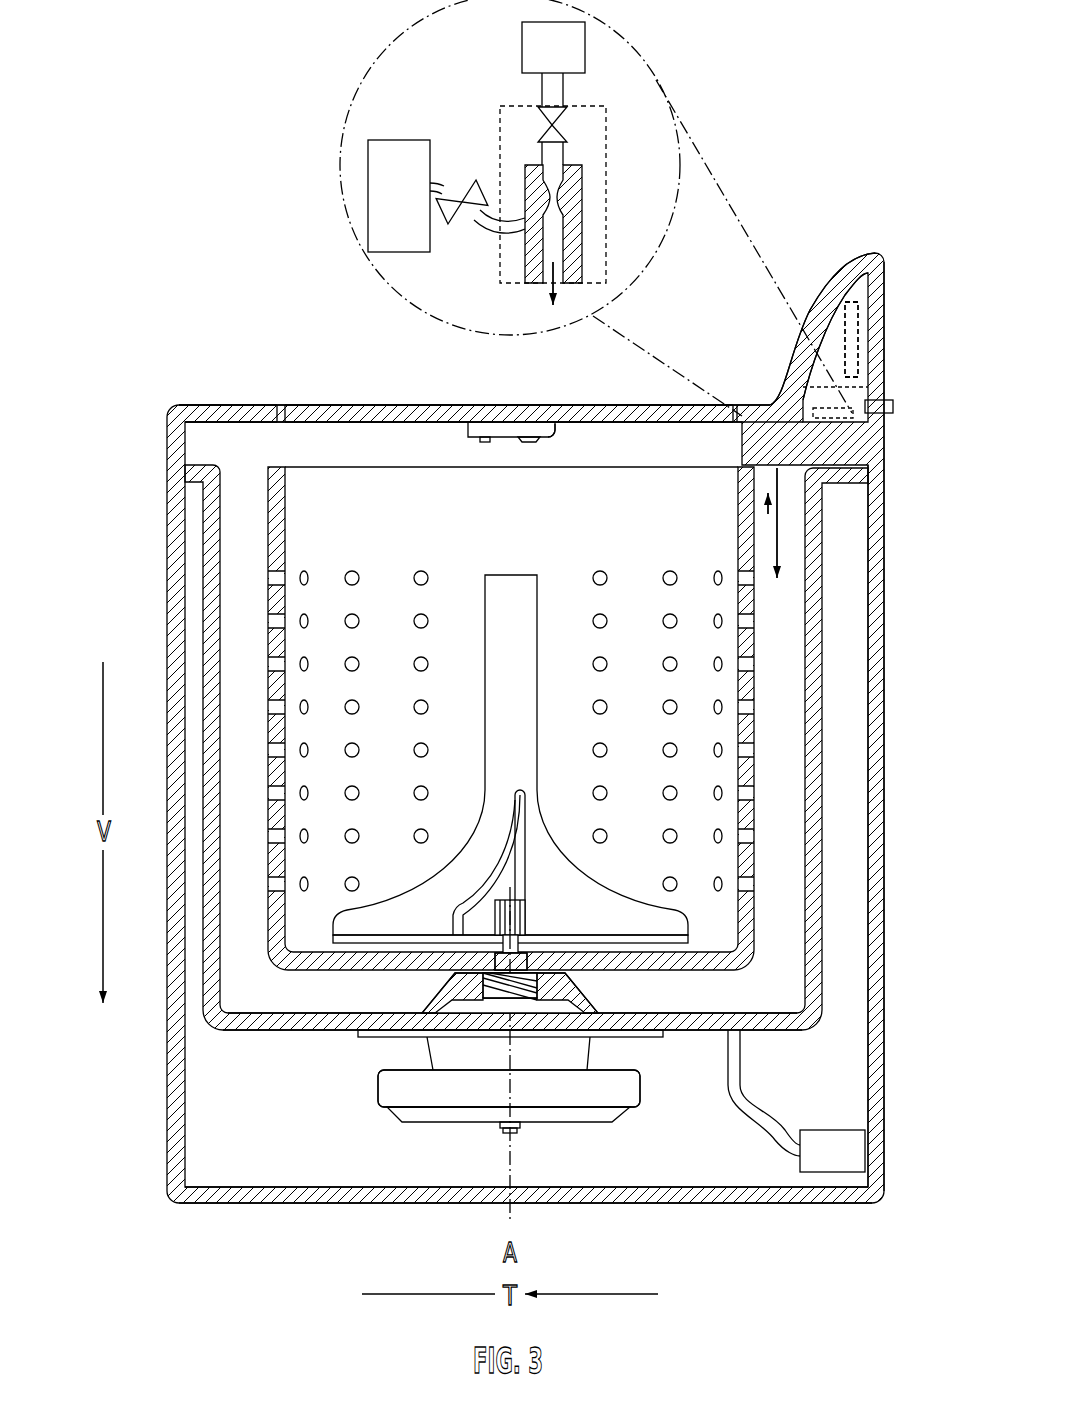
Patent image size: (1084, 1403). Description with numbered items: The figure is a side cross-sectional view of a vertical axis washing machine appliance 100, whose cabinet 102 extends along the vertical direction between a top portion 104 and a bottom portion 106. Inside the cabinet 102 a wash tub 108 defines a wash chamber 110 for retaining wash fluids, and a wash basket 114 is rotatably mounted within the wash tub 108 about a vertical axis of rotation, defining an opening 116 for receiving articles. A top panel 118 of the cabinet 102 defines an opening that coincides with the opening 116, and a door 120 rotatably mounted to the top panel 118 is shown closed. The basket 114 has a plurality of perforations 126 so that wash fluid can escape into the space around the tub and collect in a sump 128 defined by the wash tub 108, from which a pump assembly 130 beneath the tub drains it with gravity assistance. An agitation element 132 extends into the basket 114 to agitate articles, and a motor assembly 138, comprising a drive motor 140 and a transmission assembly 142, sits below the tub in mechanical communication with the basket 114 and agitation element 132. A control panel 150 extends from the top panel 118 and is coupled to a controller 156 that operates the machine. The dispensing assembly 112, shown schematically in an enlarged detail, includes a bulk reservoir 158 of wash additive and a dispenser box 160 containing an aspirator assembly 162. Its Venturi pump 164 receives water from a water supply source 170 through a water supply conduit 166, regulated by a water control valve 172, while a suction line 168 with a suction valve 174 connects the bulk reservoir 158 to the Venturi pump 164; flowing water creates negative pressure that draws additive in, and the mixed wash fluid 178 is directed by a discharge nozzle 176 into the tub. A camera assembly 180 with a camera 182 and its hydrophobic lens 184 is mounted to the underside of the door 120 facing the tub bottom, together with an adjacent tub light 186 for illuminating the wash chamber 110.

The washing machine appliance 100 is at (204, 283).
The cabinet 102 is at (175, 515).
The top portion 104 is at (156, 415).
The bottom portion 106 is at (153, 1201).
The wash tub 108 is at (815, 887).
The wash chamber 110 is at (238, 683).
The dispensing assembly 112 is at (378, 98).
The wash basket 114 is at (268, 492).
The opening 116 is at (604, 463).
The top panel 118 is at (210, 405).
The door 120 is at (398, 407).
The perforations 126 is at (442, 563).
The sump 128 is at (331, 1007).
The pump assembly 130 is at (781, 1162).
The agitation element 132 is at (518, 578).
The motor assembly 138 is at (343, 1078).
The drive motor 140 is at (635, 1090).
The transmission assembly 142 is at (577, 1037).
The control panel 150 is at (813, 302).
The controller 156 is at (862, 302).
The bulk reservoir 158 is at (399, 196).
The dispenser box 160 is at (606, 117).
The aspirator assembly 162 is at (515, 152).
The Venturi pump 164 is at (580, 195).
The water supply conduit 166 is at (563, 92).
The suction line 168 is at (492, 228).
The water supply source 170 is at (553, 47).
The water control valve 172 is at (567, 137).
The suction valve 174 is at (465, 220).
The discharge nozzle 176 is at (543, 292).
The wash fluid 178 is at (556, 300).
The camera assembly 180 is at (503, 419).
The camera 182 is at (550, 437).
The lens 184 is at (533, 452).
The tub light 186 is at (485, 442).